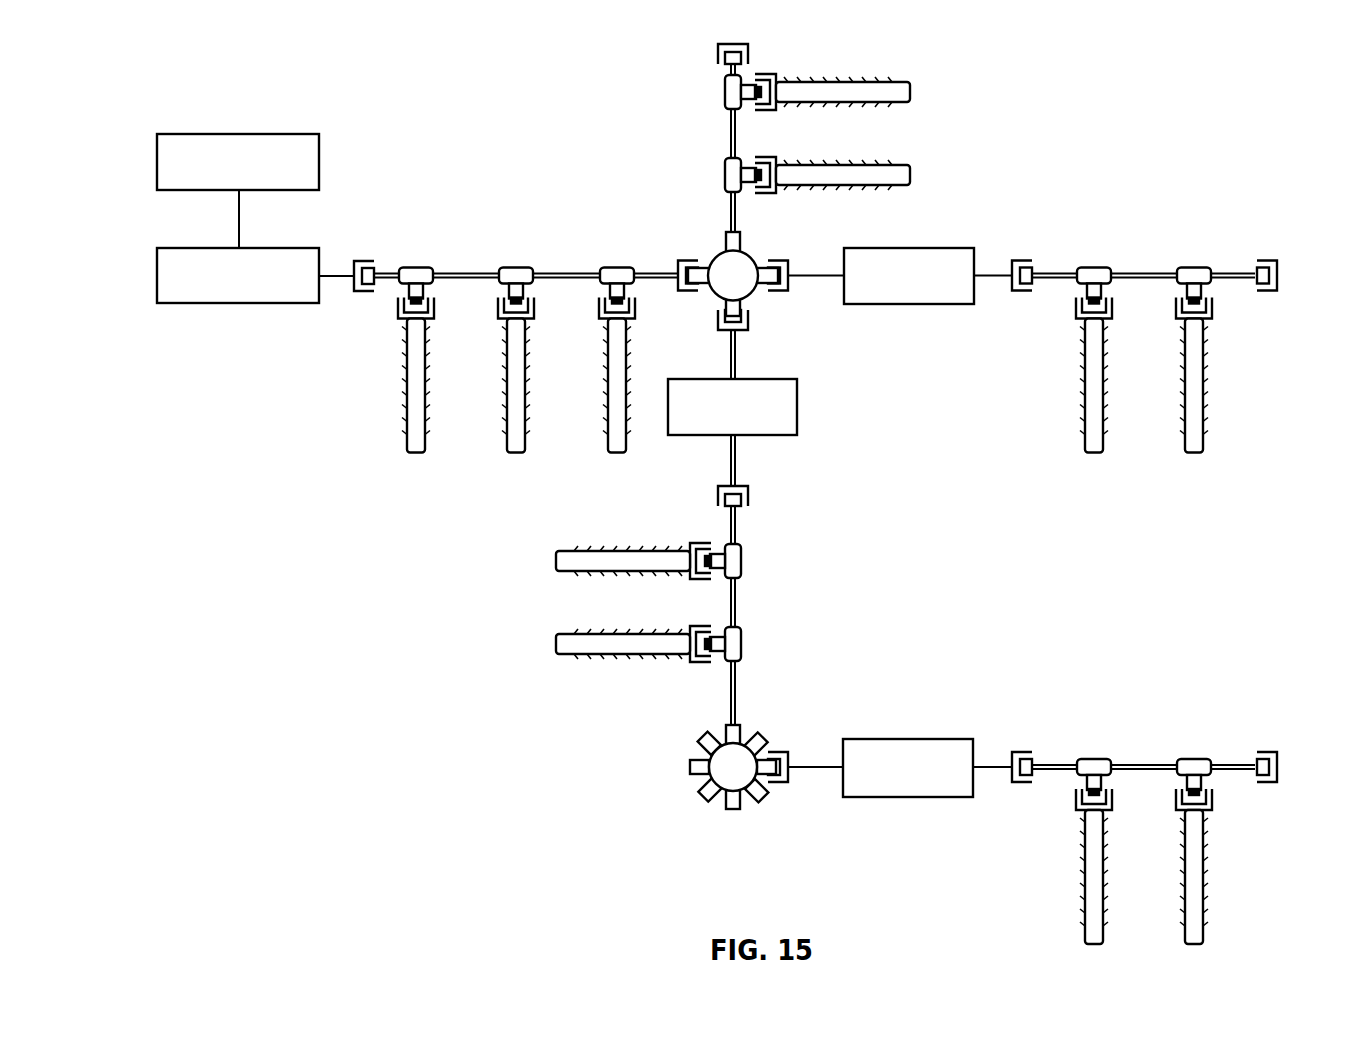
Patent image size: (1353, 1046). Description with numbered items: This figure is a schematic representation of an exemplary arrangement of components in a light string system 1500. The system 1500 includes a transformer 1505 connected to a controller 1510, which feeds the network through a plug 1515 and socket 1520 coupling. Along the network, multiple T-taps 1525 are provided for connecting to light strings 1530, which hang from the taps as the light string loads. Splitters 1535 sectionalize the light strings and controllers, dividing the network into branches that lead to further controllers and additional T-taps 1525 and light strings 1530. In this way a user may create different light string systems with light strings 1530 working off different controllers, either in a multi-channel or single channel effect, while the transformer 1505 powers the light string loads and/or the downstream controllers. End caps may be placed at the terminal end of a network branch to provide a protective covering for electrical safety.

The system 1500 is at (1206, 90).
The transformer 1505 is at (243, 134).
The controller 1510 is at (245, 303).
The plug 1515 is at (363, 294).
The socket 1520 is at (381, 270).
The T-tap 1525 is at (415, 266).
The light string 1530 is at (406, 418).
The splitter 1535 is at (722, 253).